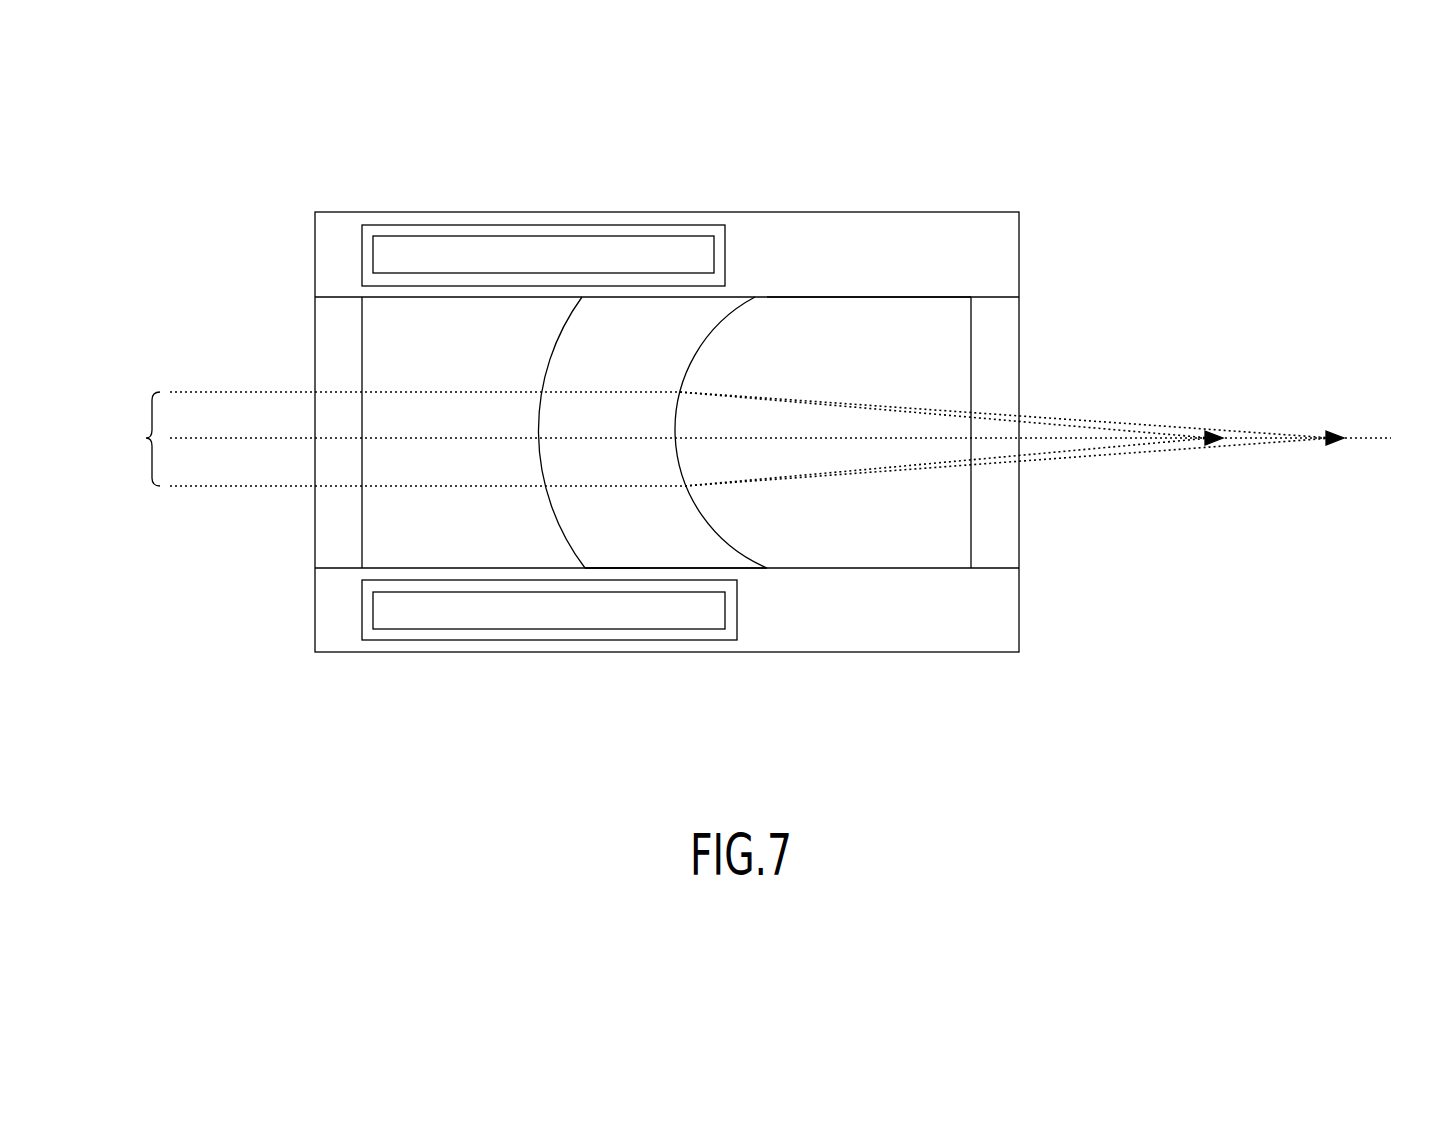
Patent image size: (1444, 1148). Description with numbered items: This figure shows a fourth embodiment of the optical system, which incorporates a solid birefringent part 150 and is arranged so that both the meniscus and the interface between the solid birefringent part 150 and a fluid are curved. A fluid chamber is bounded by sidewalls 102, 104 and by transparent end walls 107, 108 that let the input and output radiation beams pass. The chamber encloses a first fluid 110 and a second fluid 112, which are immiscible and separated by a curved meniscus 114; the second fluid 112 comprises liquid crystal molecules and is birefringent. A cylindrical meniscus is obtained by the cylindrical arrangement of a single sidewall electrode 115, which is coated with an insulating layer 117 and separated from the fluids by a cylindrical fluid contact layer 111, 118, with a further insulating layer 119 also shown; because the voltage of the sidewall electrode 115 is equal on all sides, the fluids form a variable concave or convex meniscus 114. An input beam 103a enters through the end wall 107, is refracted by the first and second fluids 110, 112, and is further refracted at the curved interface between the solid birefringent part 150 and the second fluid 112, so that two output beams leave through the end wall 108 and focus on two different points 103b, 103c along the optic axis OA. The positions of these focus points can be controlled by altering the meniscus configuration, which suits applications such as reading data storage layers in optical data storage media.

The sidewall 102 is at (372, 297).
The input beam 103a is at (146, 438).
The first focus point 103b is at (1217, 450).
The second focus point 103c is at (1340, 450).
The sidewall 104 is at (630, 570).
The end wall 107 is at (312, 507).
The end wall 108 is at (1019, 259).
The first fluid 110 is at (432, 497).
The fluid contact layer 111 is at (487, 288).
The second fluid 112 is at (675, 545).
The meniscus 114 is at (550, 366).
The sidewall electrode 115 is at (498, 608).
The insulating layer 117 is at (400, 585).
The fluid contact layer 118 is at (595, 574).
The insulating layer 119 is at (402, 278).
The solid birefringent part 150 is at (792, 333).
The optical axis OA is at (1391, 436).